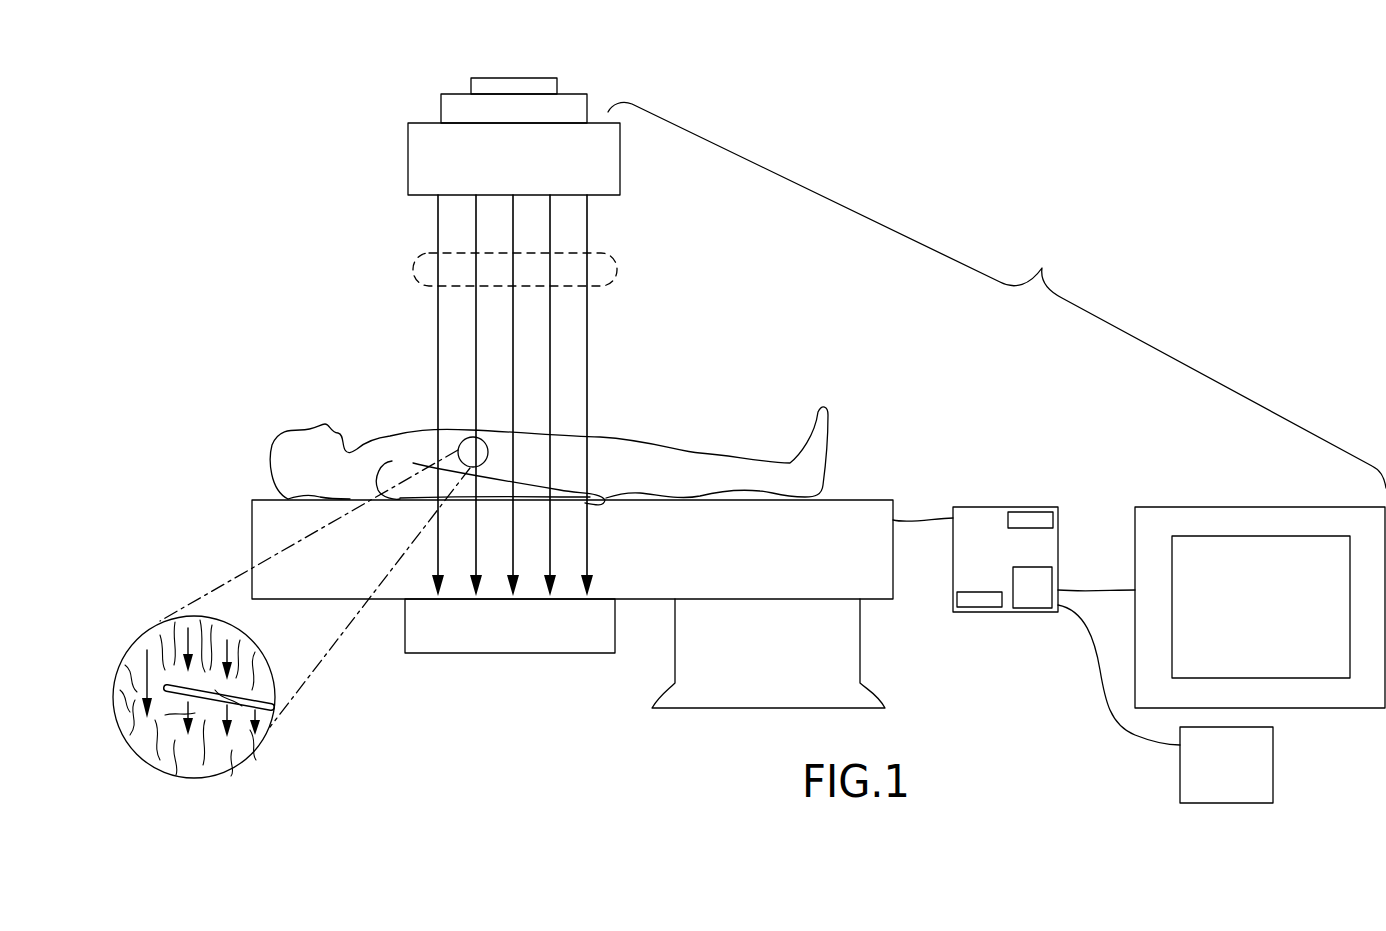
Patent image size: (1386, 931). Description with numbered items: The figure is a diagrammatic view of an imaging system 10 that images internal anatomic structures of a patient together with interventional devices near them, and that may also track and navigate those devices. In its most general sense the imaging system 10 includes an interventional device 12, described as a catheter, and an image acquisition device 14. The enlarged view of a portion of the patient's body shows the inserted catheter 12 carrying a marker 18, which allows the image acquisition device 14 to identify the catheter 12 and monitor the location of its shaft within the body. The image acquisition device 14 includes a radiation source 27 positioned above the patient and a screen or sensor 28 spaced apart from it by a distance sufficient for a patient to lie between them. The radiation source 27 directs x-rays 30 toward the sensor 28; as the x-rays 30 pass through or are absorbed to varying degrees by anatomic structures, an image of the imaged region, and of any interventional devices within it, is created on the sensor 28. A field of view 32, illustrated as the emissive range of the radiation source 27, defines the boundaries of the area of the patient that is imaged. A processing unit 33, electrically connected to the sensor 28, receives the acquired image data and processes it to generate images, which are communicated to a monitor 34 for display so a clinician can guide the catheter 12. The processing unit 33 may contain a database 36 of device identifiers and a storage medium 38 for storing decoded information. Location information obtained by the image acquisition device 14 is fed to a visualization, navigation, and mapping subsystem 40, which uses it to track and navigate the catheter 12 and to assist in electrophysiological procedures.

The imaging system 10 is at (258, 160).
The interventional device 12 is at (263, 697).
The image acquisition device 14 is at (997, 295).
The marker 18 is at (208, 692).
The radiation source 27 is at (410, 141).
The sensor 28 is at (545, 642).
The x-rays 30 is at (588, 218).
The field of view 32 is at (411, 270).
The processing unit 33 is at (970, 505).
The monitor 34 is at (1181, 522).
The database 36 is at (1024, 520).
The storage medium 38 is at (1038, 596).
The visualization, navigation, and mapping subsystem 40 is at (1240, 778).